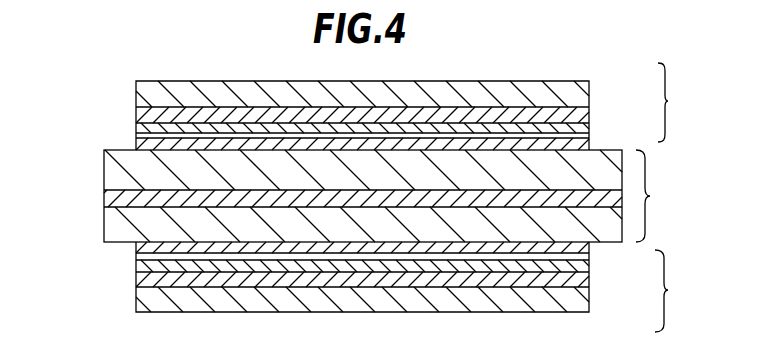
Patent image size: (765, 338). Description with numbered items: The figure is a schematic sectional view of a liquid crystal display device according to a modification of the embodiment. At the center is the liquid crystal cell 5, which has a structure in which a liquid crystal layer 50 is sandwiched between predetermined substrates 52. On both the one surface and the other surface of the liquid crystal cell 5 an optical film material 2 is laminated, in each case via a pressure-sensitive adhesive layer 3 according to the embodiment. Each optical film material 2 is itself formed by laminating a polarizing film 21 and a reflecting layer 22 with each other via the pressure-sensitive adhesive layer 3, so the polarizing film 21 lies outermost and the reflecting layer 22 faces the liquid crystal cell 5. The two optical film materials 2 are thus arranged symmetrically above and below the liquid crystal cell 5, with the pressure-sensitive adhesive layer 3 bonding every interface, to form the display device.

The optical film material 2 is at (411, 197).
The polarizing film 21 is at (580, 92).
The pressure-sensitive adhesive layer 3 is at (136, 141).
The reflecting layer 22 is at (580, 129).
The liquid crystal cell 5 is at (385, 196).
The substrates 52 is at (115, 172).
The liquid crystal layer 50 is at (117, 200).